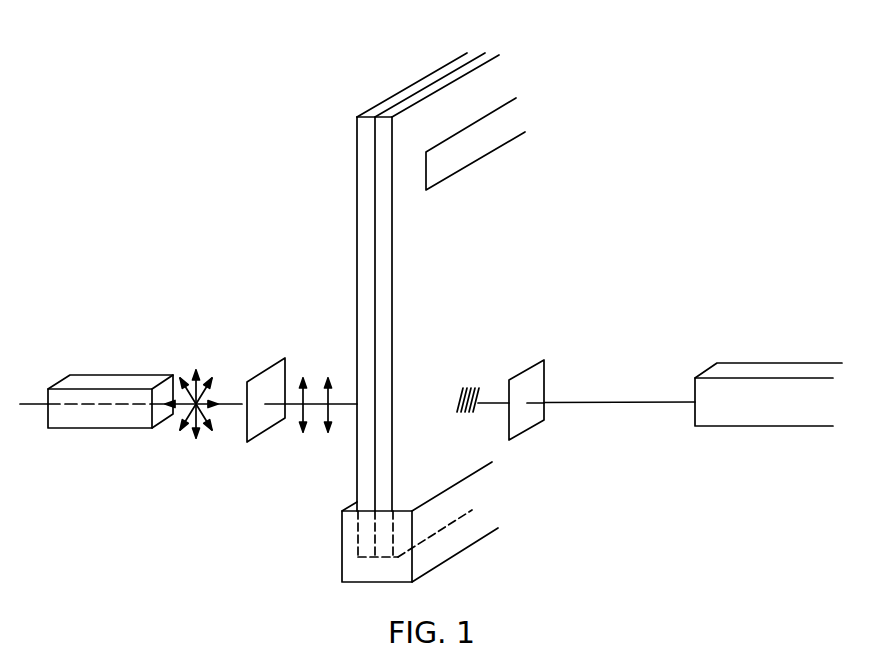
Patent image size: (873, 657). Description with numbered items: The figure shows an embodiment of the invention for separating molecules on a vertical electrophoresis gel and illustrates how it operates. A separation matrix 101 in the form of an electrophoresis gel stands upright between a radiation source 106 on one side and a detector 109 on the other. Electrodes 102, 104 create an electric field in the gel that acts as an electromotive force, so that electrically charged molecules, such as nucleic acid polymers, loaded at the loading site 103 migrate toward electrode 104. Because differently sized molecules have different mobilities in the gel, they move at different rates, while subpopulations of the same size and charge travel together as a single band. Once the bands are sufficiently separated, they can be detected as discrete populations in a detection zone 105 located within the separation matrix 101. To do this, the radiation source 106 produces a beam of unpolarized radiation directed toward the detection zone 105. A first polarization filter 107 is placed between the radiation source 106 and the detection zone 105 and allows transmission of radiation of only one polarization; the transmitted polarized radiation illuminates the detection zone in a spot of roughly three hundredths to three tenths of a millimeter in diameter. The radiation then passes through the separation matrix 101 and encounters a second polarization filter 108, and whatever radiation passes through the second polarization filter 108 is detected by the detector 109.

The separation matrix 101 is at (397, 262).
The electrode 102 is at (430, 87).
The loading site 103 is at (481, 147).
The electrode 104 is at (462, 542).
The detection zone 105 is at (472, 385).
The radiation source 106 is at (117, 380).
The first polarization filter 107 is at (268, 377).
The second polarization filter 108 is at (527, 373).
The detector 109 is at (745, 370).